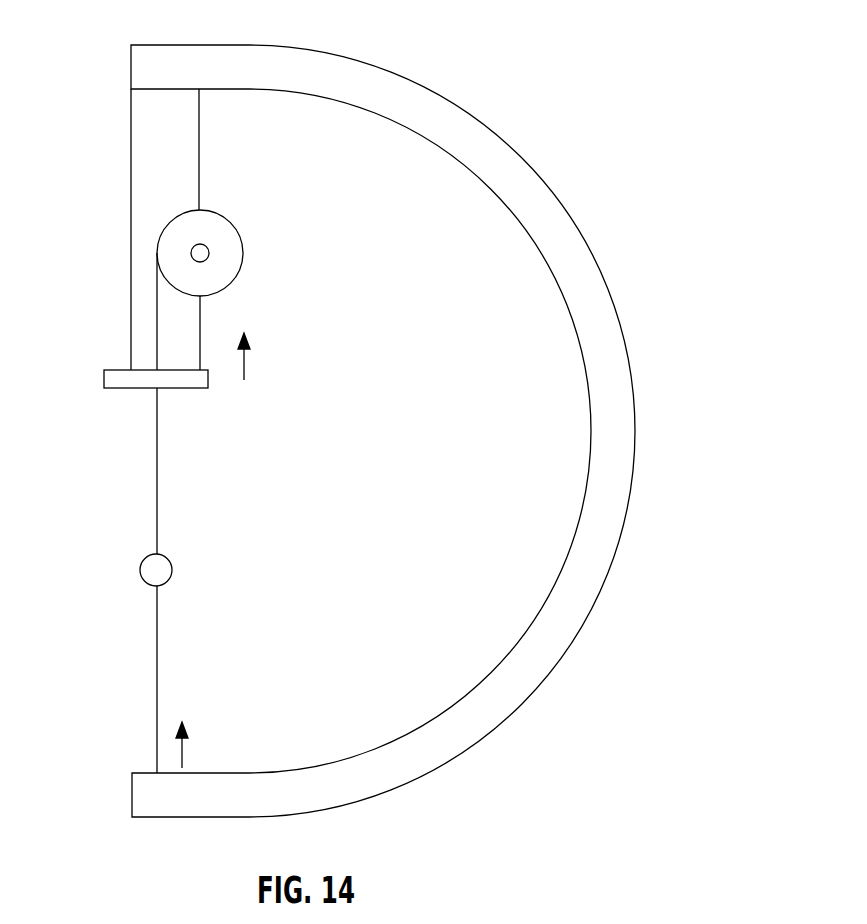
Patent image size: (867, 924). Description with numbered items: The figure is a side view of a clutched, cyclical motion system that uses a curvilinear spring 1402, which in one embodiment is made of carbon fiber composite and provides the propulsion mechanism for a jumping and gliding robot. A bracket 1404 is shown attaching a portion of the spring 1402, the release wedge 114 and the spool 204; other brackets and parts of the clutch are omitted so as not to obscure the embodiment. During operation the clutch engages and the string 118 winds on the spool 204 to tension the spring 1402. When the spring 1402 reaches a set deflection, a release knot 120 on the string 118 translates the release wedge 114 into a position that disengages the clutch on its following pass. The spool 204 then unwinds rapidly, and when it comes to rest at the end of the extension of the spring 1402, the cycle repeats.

The curvilinear spring 1402 is at (636, 430).
The bracket 1404 is at (160, 180).
The spool 204 is at (242, 239).
The string 118 is at (156, 472).
The release wedge 114 is at (103, 380).
The release knot 120 is at (140, 570).